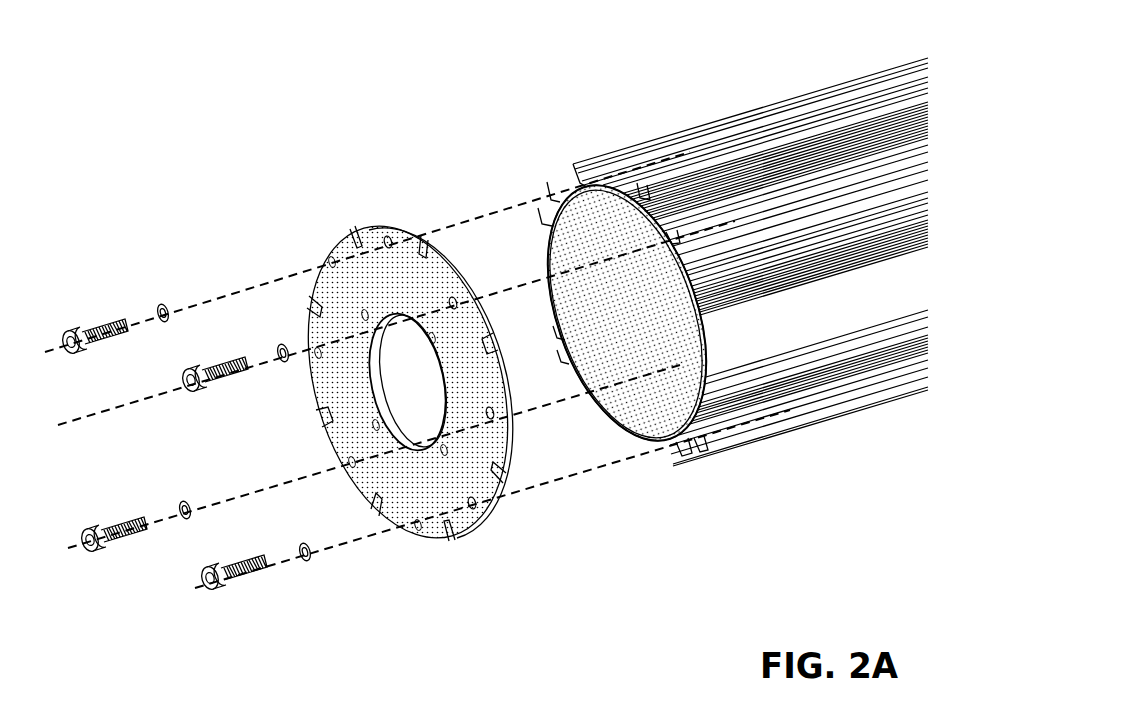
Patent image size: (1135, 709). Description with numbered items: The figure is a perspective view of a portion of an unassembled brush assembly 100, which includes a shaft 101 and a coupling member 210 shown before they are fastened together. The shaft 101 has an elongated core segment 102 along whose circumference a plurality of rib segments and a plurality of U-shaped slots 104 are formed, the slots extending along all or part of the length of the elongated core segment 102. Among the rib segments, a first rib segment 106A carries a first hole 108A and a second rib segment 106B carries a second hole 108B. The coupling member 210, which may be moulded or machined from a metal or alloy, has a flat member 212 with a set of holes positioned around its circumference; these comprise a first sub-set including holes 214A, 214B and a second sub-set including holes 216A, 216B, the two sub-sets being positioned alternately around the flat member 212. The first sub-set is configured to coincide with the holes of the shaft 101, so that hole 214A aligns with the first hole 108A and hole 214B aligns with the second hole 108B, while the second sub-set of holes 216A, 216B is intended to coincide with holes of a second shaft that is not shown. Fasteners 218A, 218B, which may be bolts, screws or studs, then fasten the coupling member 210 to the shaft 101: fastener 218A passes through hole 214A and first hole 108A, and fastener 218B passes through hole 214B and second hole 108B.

The brush assembly 100 is at (298, 60).
The shaft 101 is at (900, 60).
The elongated core segment 102 is at (640, 448).
The U-shaped slots 104 is at (683, 456).
The first rib segment 106A is at (748, 215).
The second rib segment 106B is at (755, 425).
The first hole 108A is at (672, 238).
The second hole 108B is at (700, 446).
The coupling member 210 is at (340, 230).
The flat member 212 is at (375, 280).
The hole 214A is at (457, 303).
The hole 214B is at (476, 506).
The hole 216A is at (392, 240).
The hole 216B is at (496, 415).
The fastener 218A is at (212, 390).
The fastener 218B is at (255, 585).